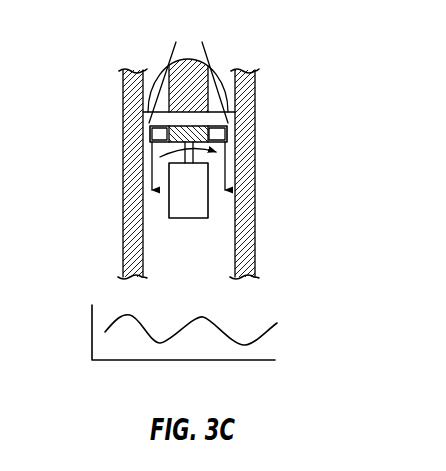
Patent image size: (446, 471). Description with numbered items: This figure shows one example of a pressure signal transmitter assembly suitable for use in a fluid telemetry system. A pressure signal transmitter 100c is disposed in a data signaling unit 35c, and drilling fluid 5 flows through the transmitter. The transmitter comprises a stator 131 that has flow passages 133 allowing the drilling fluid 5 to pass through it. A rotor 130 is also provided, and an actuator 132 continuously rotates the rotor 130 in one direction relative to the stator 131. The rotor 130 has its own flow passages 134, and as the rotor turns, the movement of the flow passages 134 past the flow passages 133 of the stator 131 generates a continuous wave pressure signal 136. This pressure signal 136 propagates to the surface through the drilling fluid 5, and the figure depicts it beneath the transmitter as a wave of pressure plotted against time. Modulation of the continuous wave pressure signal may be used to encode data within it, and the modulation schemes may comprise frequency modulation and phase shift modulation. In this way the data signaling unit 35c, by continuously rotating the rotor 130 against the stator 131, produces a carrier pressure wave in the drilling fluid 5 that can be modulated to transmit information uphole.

The pressure signal transmitter 100c is at (289, 92).
The data signaling unit 35c is at (122, 97).
The flow passages of stator 133 is at (151, 125).
The stator 131 is at (209, 63).
The drilling fluid 5 is at (188, 72).
The flow passages of rotor 134 is at (150, 133).
The rotor 130 is at (227, 133).
The actuator 132 is at (208, 208).
The continuous wave pressure signal 136 is at (270, 332).